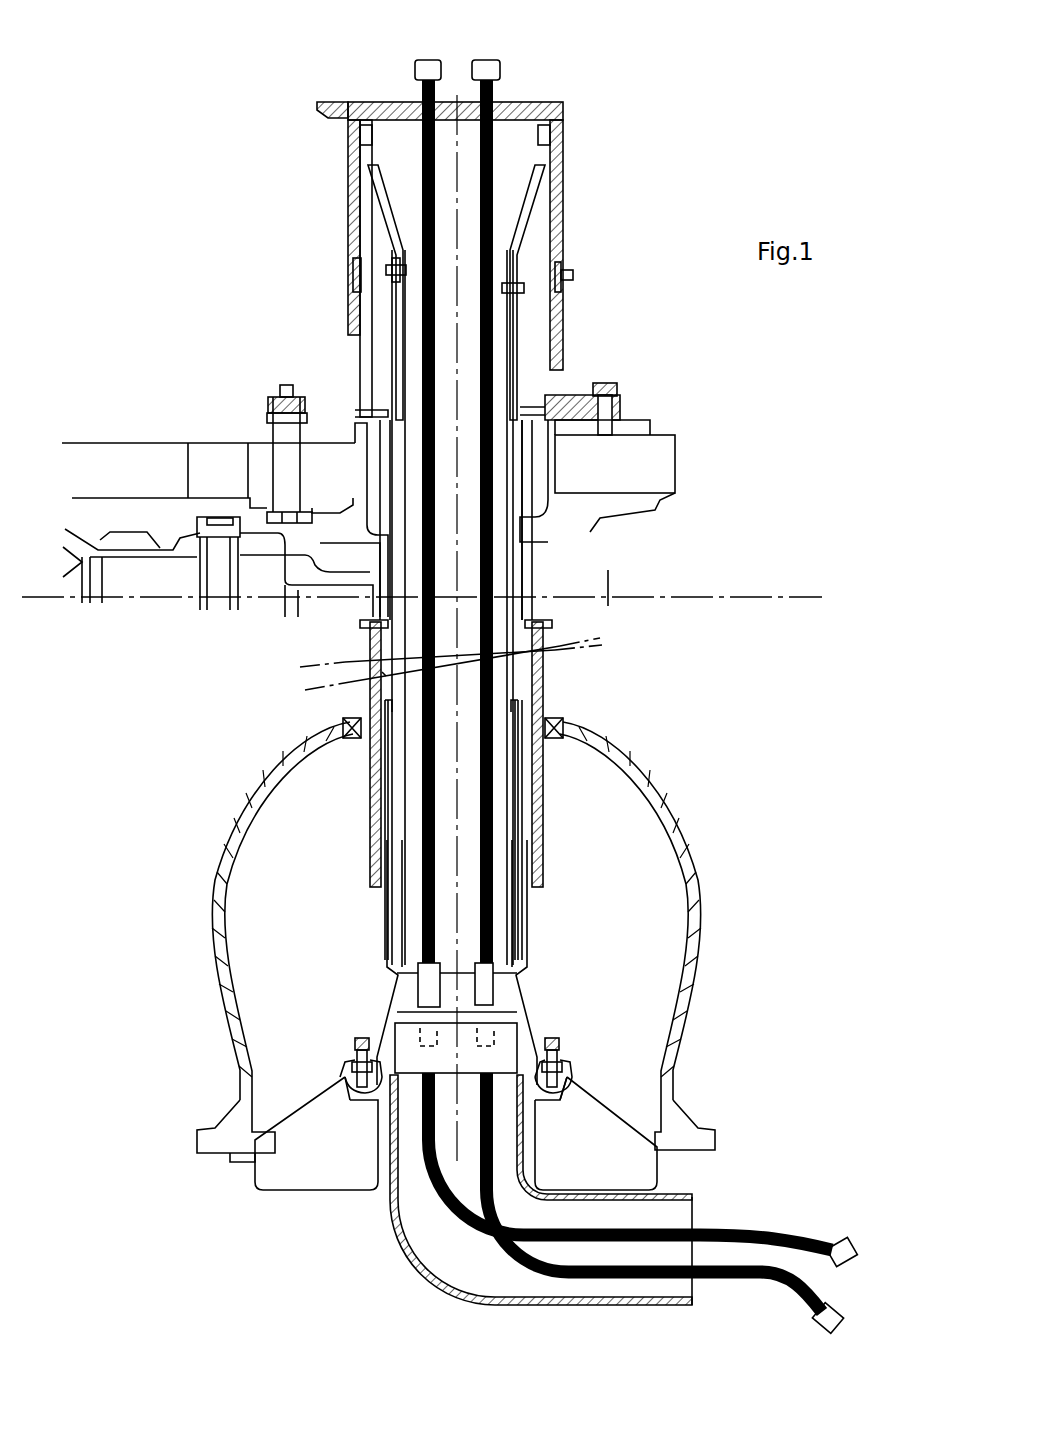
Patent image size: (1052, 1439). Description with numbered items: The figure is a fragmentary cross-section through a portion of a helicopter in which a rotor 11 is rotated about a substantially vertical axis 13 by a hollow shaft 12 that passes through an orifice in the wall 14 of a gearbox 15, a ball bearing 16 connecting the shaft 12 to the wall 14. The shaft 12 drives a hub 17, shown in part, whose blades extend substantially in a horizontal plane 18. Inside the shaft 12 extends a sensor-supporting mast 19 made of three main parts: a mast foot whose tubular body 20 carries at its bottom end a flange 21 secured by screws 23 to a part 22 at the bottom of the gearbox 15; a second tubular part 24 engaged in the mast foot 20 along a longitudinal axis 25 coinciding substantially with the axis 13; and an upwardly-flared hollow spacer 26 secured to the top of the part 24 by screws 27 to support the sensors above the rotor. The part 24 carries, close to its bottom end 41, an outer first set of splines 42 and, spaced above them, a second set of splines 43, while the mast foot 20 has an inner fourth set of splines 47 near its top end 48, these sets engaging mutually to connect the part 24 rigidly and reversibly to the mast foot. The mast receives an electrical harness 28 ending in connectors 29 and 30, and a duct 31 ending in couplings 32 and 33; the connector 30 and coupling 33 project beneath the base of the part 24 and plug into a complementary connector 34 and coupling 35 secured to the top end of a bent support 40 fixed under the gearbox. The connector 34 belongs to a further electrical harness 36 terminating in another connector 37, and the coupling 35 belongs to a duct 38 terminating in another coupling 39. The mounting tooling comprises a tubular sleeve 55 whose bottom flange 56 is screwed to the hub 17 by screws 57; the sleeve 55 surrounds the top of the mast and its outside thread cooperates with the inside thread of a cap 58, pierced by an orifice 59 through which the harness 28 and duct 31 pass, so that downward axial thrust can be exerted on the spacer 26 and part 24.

The rotor 11 is at (190, 325).
The hollow shaft 12 is at (543, 758).
The axis 13 is at (480, 535).
The wall 14 is at (218, 905).
The gearbox 15 is at (705, 783).
The ball bearing 16 is at (362, 748).
The hub 17 is at (163, 462).
The horizontal plane 18 is at (790, 597).
The mast 19 is at (515, 455).
The tubular body 20 is at (520, 978).
The flange 21 is at (560, 1062).
The part 22 is at (585, 1095).
The screws 23 is at (357, 1042).
The second tubular part 24 is at (518, 620).
The longitudinal axis 25 is at (525, 540).
The hollow spacer 26 is at (530, 238).
The screws 27 is at (524, 288).
The electrical harness 28 is at (405, 375).
The connector 29 is at (425, 60).
The connector 30 is at (420, 995).
The duct 31 is at (495, 362).
The coupling 32 is at (485, 60).
The coupling 33 is at (492, 990).
The complementary connector 34 is at (415, 1080).
The complementary coupling 35 is at (520, 1085).
The electrical harness 36 is at (560, 1285).
The connector 37 is at (840, 1312).
The duct 38 is at (735, 1222).
The coupling 39 is at (843, 1242).
The support 40 is at (400, 1243).
The bottom end 41 is at (400, 985).
The first set of splines 42 is at (530, 868).
The second set of splines 43 is at (555, 712).
The fourth set of splines 47 is at (528, 825).
The top end 48 is at (386, 676).
The tubular sleeve 55 is at (358, 270).
The flange 56 is at (578, 390).
The screws 57 is at (618, 390).
The cap 58 is at (563, 150).
The orifice 59 is at (512, 103).